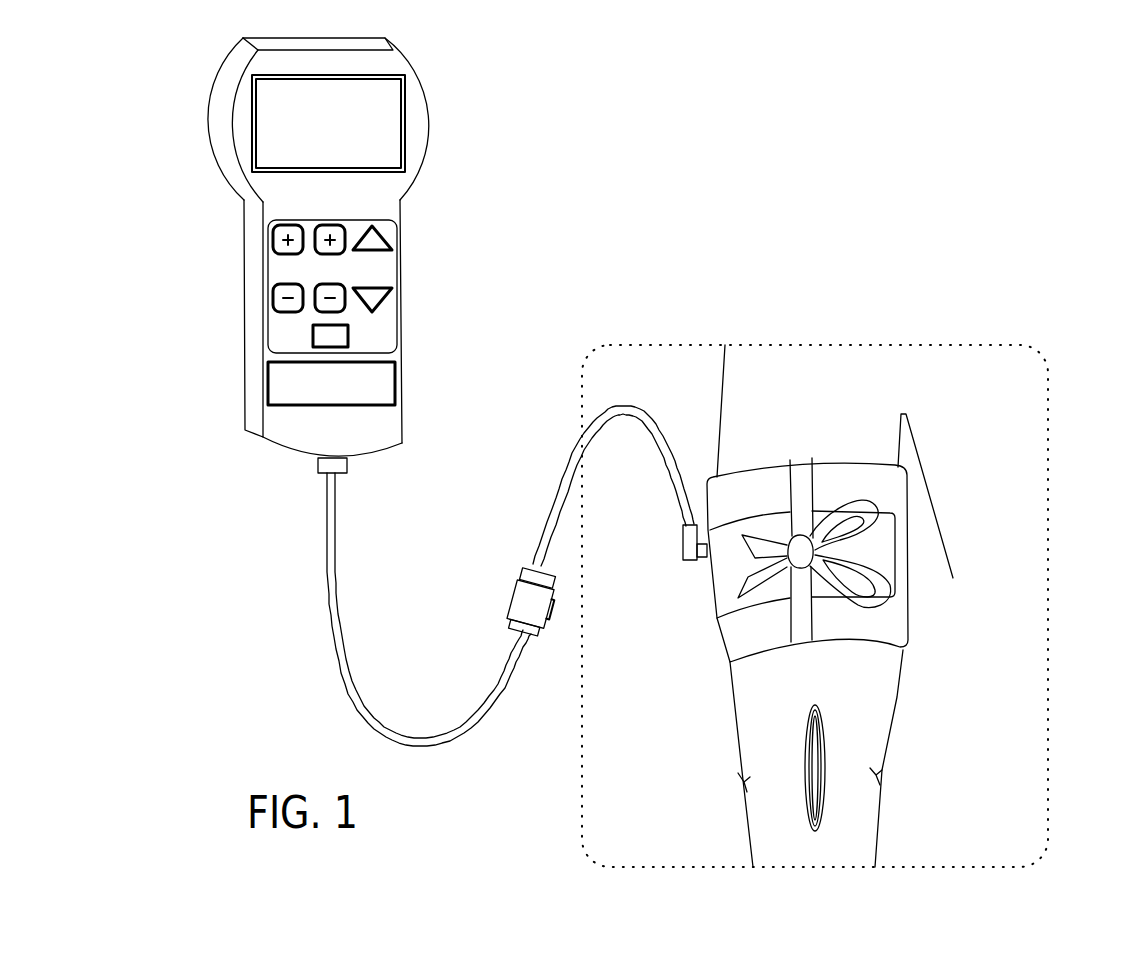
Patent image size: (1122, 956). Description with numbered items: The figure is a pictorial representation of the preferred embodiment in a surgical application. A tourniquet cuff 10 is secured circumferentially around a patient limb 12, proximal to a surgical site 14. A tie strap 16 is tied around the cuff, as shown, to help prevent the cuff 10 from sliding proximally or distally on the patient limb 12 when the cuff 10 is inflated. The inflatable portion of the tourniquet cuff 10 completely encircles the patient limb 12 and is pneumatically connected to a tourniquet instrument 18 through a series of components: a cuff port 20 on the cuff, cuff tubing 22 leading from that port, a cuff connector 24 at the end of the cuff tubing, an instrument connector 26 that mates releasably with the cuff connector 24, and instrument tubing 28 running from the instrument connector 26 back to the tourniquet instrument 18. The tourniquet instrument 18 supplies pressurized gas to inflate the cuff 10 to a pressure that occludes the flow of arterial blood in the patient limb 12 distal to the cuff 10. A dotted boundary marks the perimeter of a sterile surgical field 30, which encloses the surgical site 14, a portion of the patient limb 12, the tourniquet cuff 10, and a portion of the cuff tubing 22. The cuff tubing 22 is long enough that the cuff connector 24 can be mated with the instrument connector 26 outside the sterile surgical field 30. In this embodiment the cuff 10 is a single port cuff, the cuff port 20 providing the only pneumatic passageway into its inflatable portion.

The tourniquet cuff 10 is at (908, 633).
The patient limb 12 is at (896, 700).
The surgical site 14 is at (825, 742).
The tie strap 16 is at (897, 595).
The tourniquet instrument 18 is at (433, 108).
The cuff port 20 is at (688, 563).
The cuff tubing 22 is at (567, 460).
The cuff connector 24 is at (525, 571).
The instrument connector 26 is at (510, 615).
The instrument tubing 28 is at (327, 537).
The sterile surgical field 30 is at (1048, 368).